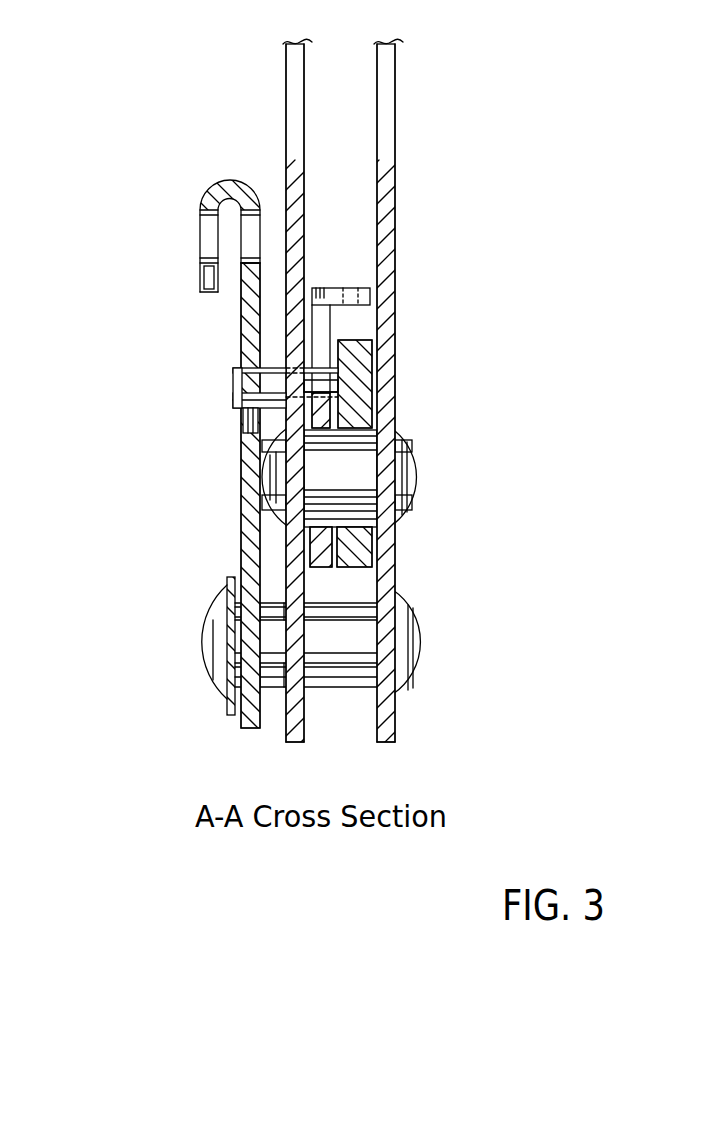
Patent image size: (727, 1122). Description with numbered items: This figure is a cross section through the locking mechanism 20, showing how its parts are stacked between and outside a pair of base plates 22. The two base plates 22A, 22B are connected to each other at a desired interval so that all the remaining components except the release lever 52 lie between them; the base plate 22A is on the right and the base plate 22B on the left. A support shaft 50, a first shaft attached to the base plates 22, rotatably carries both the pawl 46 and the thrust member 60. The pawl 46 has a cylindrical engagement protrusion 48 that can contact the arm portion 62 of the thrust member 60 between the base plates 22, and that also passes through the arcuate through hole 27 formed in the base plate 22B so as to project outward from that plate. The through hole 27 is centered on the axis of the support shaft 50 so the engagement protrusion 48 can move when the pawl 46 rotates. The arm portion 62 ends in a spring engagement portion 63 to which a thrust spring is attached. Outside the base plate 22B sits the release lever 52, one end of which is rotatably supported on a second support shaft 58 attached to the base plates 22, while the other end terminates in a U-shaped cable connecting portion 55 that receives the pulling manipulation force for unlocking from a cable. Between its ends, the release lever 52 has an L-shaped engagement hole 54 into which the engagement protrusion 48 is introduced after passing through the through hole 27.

The locking mechanism 20 is at (100, 124).
The base plates 22 is at (363, 394).
The base plate 22A is at (387, 108).
The base plate 22B is at (291, 115).
The through hole 27 is at (304, 368).
The pawl 46 is at (360, 383).
The engagement protrusion 48 is at (236, 387).
The support shaft 50 is at (345, 473).
The release lever 52 is at (246, 490).
The engagement hole 54 is at (241, 418).
The cable connecting portion 55 is at (200, 233).
The support shaft 58 is at (250, 641).
The thrust member 60 is at (317, 543).
The arm portion 62 is at (320, 322).
The spring engagement portion 63 is at (350, 288).